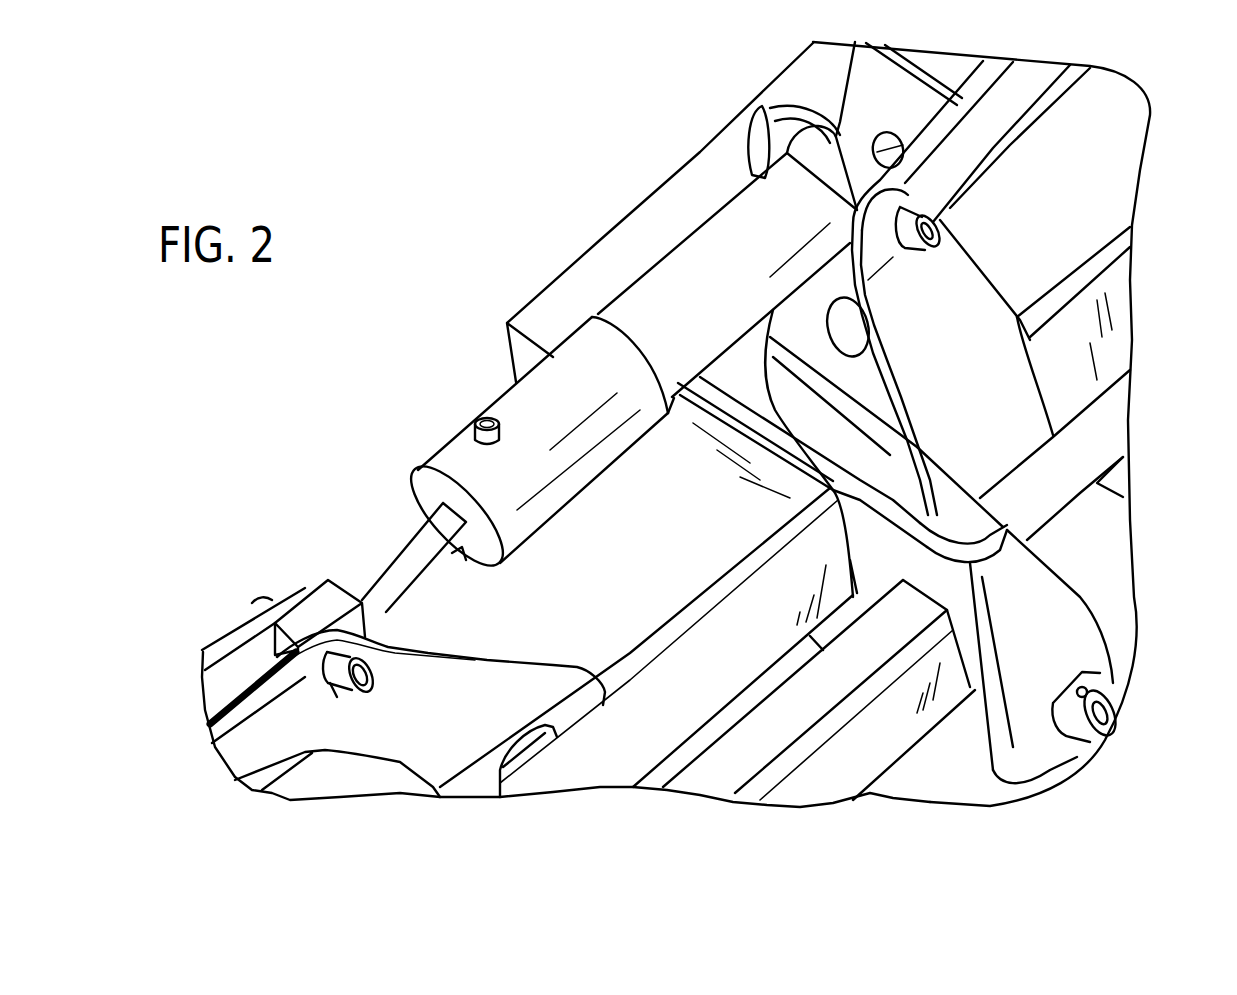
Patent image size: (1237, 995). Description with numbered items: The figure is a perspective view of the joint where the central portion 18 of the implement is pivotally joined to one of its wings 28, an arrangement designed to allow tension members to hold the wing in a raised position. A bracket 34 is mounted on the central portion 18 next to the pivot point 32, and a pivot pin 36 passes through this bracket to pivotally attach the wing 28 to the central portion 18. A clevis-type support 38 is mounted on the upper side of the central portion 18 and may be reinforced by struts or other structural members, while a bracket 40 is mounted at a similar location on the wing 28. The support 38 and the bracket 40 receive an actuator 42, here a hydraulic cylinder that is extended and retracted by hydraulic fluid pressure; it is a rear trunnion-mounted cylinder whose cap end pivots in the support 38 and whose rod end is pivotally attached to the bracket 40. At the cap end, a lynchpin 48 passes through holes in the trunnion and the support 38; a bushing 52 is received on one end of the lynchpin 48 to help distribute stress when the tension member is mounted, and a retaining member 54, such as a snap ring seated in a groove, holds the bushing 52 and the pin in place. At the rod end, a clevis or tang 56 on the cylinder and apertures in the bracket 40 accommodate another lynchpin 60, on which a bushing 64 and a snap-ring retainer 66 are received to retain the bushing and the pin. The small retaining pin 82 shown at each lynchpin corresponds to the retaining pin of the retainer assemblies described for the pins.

The central portion 18 is at (1086, 213).
The wing 28 is at (655, 558).
The pivot point 32 is at (1143, 660).
The bracket 34 is at (1030, 760).
The pivot pin 36 is at (1100, 740).
The clevis-type support 38 is at (708, 147).
The bracket 40 is at (242, 627).
The actuator 42 is at (508, 398).
The lynchpin 48 is at (940, 233).
The bushing 52 is at (930, 197).
The retaining member 54 is at (900, 252).
The clevis or tang 56 is at (327, 603).
The lynchpin 60 is at (372, 687).
The bushing 64 is at (328, 667).
The lower bracket flange 66 is at (329, 683).
The retaining pin 82 is at (368, 668).